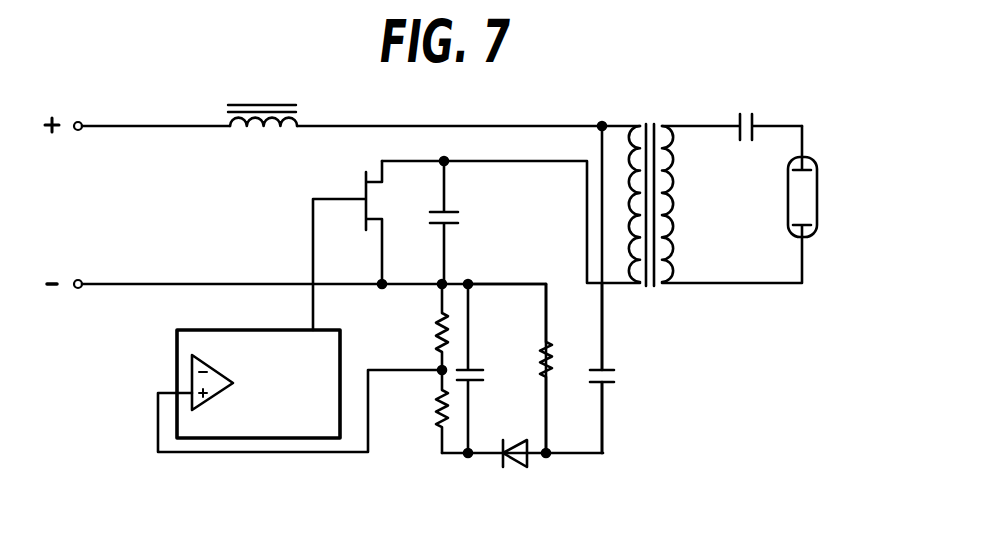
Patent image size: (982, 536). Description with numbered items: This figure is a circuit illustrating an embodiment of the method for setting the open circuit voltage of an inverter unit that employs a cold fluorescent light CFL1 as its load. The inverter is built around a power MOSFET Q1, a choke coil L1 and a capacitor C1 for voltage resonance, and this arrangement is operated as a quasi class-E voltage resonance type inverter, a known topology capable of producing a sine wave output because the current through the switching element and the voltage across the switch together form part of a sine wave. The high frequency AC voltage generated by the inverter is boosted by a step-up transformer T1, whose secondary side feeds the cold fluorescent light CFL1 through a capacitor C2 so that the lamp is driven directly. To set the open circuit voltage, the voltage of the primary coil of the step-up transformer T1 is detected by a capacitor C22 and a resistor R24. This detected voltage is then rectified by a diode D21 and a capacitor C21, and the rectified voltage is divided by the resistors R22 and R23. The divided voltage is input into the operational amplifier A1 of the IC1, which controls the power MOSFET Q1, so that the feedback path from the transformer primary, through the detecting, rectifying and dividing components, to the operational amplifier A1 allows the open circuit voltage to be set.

The choke coil L1 is at (262, 93).
The power MOSFET Q1 is at (347, 245).
The capacitor for voltage resonance C1 is at (463, 222).
The step-up transformer T1 is at (651, 187).
The capacitor C2 is at (732, 109).
The cold fluorescent light CFL1 is at (775, 204).
The IC IC1 is at (258, 384).
The operational amplifier A1 is at (222, 390).
The resistor R22 is at (411, 327).
The resistor R23 is at (411, 411).
The capacitor C21 is at (494, 368).
The resistor R24 is at (550, 358).
The capacitor C22 is at (627, 368).
The diode D21 is at (518, 476).